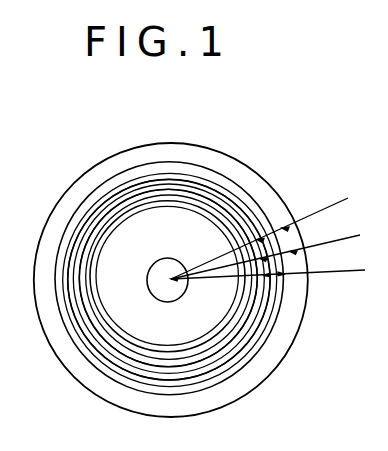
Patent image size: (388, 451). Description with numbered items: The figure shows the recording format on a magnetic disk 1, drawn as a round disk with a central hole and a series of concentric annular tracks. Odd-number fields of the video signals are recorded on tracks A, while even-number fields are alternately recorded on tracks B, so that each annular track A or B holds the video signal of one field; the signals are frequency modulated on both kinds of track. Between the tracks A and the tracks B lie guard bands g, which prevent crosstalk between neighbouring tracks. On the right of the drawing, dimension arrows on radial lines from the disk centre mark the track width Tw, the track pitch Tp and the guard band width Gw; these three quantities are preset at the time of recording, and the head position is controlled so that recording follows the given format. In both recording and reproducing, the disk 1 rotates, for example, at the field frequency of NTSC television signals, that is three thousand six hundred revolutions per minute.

The magnetic disk 1 is at (257, 377).
The guard band g is at (125, 198).
The track A is at (182, 193).
The track B is at (218, 213).
The track width Tw is at (259, 234).
The track pitch Tp is at (265, 246).
The guard band width Gw is at (268, 263).